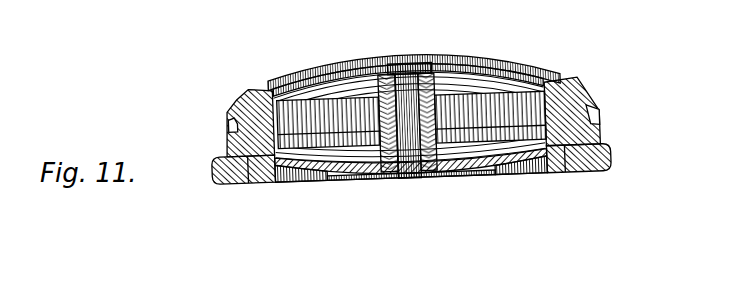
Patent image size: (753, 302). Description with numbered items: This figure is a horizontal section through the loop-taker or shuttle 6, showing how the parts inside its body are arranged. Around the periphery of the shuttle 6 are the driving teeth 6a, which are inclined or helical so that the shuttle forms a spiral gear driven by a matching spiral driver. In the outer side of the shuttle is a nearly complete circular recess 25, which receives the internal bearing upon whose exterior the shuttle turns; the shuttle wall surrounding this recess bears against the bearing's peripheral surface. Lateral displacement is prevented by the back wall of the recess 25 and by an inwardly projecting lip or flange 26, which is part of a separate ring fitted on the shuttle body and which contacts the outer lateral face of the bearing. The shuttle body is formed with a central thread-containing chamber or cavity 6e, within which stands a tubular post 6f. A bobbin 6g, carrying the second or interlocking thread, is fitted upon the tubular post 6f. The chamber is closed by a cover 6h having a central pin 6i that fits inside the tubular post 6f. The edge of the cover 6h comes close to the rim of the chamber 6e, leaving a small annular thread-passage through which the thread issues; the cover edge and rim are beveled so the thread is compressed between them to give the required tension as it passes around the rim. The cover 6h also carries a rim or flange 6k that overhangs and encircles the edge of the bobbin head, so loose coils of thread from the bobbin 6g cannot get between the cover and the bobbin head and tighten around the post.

The shuttle 6 is at (595, 87).
The peripheral teeth 6a is at (596, 106).
The thread-containing chamber 6e is at (474, 170).
The tubular post 6f is at (450, 72).
The bobbin 6g is at (352, 83).
The cover 6h is at (294, 78).
The central pin 6i is at (405, 183).
The rim or flange 6k is at (272, 98).
The circular recess 25 is at (290, 186).
The lip or flange 26 is at (561, 172).